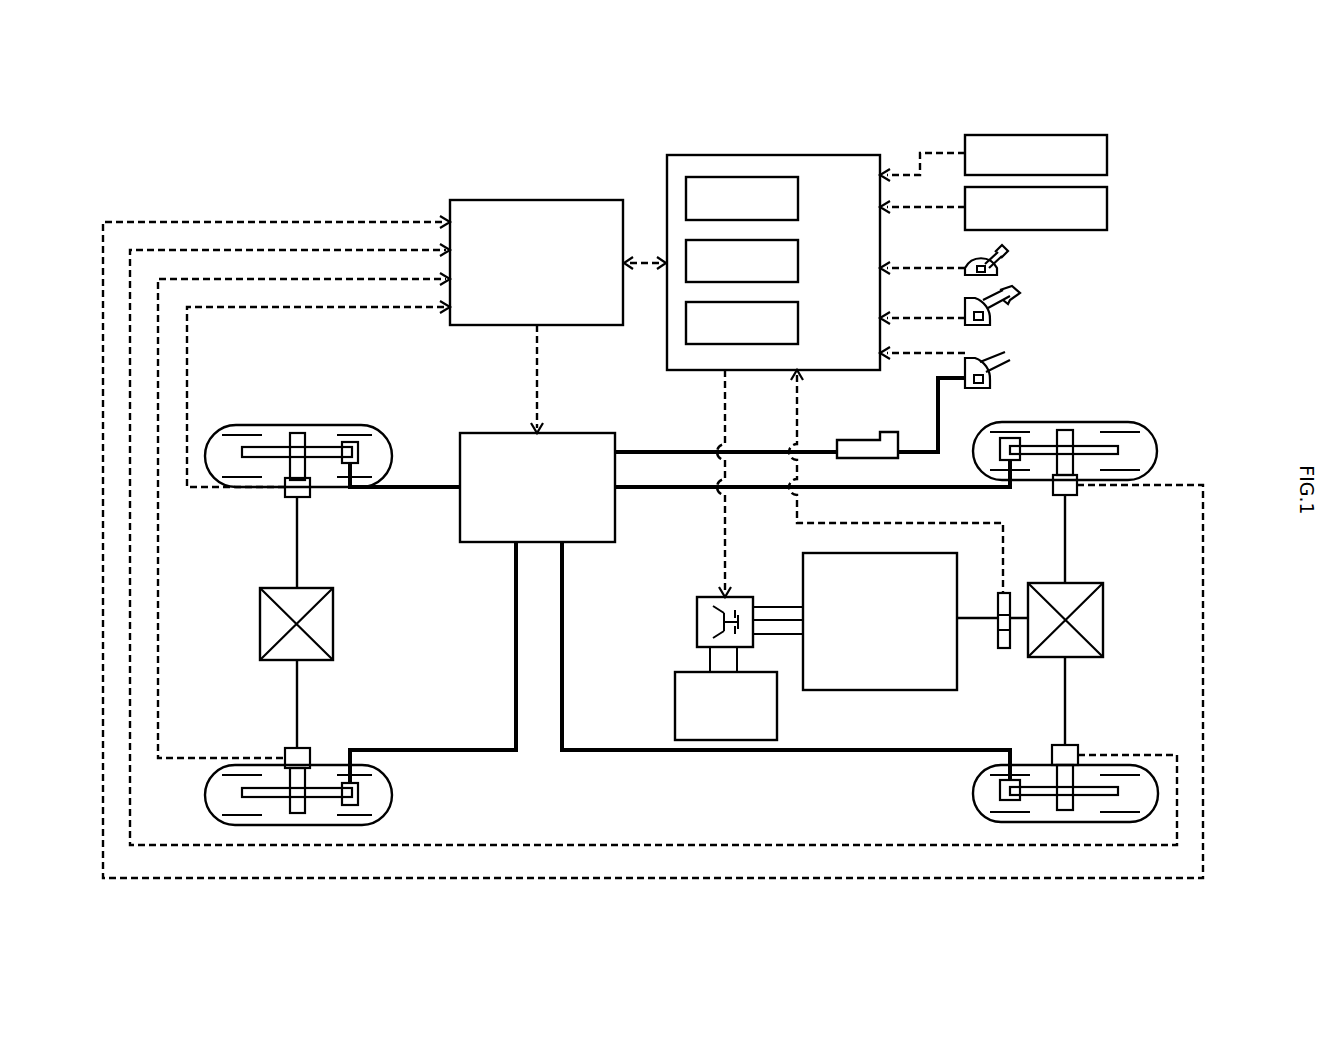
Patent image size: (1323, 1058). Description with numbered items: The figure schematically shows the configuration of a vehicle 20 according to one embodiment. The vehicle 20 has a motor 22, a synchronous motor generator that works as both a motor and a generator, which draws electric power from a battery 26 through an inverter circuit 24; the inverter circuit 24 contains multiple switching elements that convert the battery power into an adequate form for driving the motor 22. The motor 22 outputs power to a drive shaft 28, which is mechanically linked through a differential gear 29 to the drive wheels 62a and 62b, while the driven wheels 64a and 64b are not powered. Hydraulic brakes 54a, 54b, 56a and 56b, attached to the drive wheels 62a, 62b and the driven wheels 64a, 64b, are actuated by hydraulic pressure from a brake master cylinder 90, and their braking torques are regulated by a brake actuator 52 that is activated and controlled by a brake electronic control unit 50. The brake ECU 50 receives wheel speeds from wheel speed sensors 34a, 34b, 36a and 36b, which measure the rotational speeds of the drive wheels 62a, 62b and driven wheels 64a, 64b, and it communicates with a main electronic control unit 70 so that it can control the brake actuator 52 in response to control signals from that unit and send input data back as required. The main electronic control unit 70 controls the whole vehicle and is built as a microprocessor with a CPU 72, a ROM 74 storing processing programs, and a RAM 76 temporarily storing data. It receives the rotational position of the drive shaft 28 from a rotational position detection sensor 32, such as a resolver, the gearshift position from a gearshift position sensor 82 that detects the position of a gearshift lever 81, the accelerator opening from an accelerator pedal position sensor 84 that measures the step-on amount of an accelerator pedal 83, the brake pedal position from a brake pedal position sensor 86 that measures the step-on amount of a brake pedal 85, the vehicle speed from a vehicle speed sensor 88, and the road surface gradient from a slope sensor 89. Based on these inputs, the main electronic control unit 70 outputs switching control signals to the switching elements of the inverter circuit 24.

The vehicle 20 is at (620, 158).
The motor 22 is at (803, 582).
The inverter circuit 24 is at (697, 620).
The battery 26 is at (675, 705).
The drive shaft 28 is at (970, 620).
The differential gear 29 is at (1103, 620).
The rotational position detection sensor 32 is at (1004, 648).
The wheel speed sensor 34a is at (1077, 492).
The wheel speed sensor 34b is at (1078, 752).
The wheel speed sensor 36a is at (285, 490).
The wheel speed sensor 36b is at (285, 752).
The brake electronic control unit 50 is at (537, 200).
The brake actuator 52 is at (503, 433).
The hydraulic brake 54a is at (1013, 462).
The hydraulic brake 54b is at (1000, 788).
The hydraulic brake 56a is at (345, 465).
The hydraulic brake 56b is at (343, 783).
The drive wheel 62a is at (1157, 445).
The drive wheel 62b is at (973, 790).
The driven wheel 64a is at (297, 425).
The driven wheel 64b is at (392, 795).
The main electronic control unit 70 is at (770, 155).
The CPU 72 is at (798, 198).
The ROM 74 is at (798, 261).
The RAM 76 is at (798, 323).
The gearshift lever 81 is at (1000, 248).
The gearshift position sensor 82 is at (999, 262).
The accelerator pedal 83 is at (1010, 292).
The accelerator pedal position sensor 84 is at (990, 318).
The brake pedal 85 is at (1005, 352).
The brake pedal position sensor 86 is at (995, 372).
The vehicle speed sensor 88 is at (1107, 206).
The slope sensor 89 is at (1107, 152).
The brake master cylinder 90 is at (868, 440).